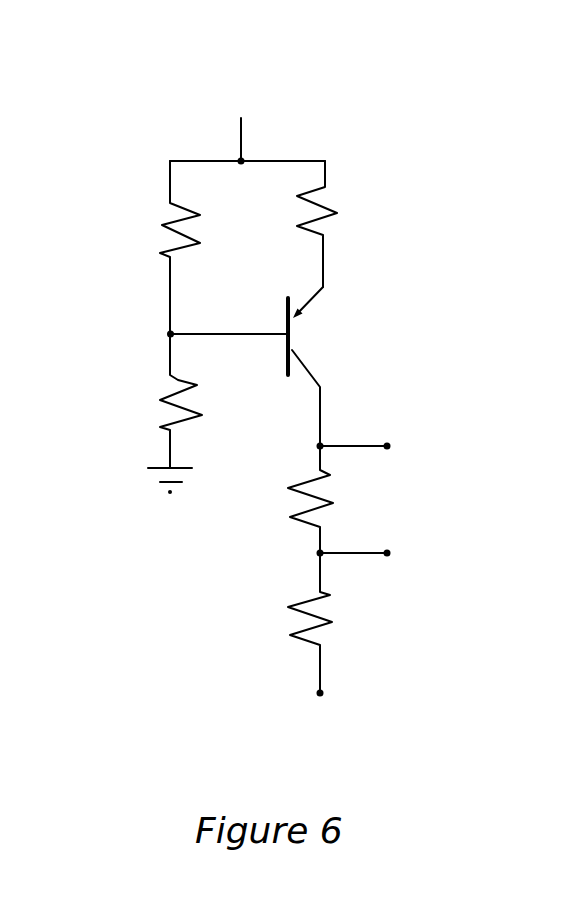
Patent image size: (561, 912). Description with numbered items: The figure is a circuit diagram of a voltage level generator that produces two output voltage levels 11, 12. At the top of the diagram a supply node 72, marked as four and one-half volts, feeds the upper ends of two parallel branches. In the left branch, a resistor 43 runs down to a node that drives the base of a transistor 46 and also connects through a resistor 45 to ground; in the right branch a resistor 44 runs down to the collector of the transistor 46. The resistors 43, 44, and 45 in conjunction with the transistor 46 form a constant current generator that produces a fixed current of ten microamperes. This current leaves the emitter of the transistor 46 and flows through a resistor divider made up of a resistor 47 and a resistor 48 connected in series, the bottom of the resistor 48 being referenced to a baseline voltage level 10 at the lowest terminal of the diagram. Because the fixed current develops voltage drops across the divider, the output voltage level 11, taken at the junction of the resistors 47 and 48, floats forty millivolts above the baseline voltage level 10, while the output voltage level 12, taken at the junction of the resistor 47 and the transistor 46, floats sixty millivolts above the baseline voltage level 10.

The 4.5 volt power supply node 72 is at (290, 107).
The resistor 43 is at (167, 228).
The resistor 44 is at (333, 198).
The resistor 45 is at (160, 400).
The transistor 46 is at (292, 338).
The resistor 47 is at (290, 495).
The resistor 48 is at (292, 622).
The output voltage level 12 is at (397, 446).
The output voltage level 11 is at (397, 553).
The baseline voltage level 10 is at (317, 694).